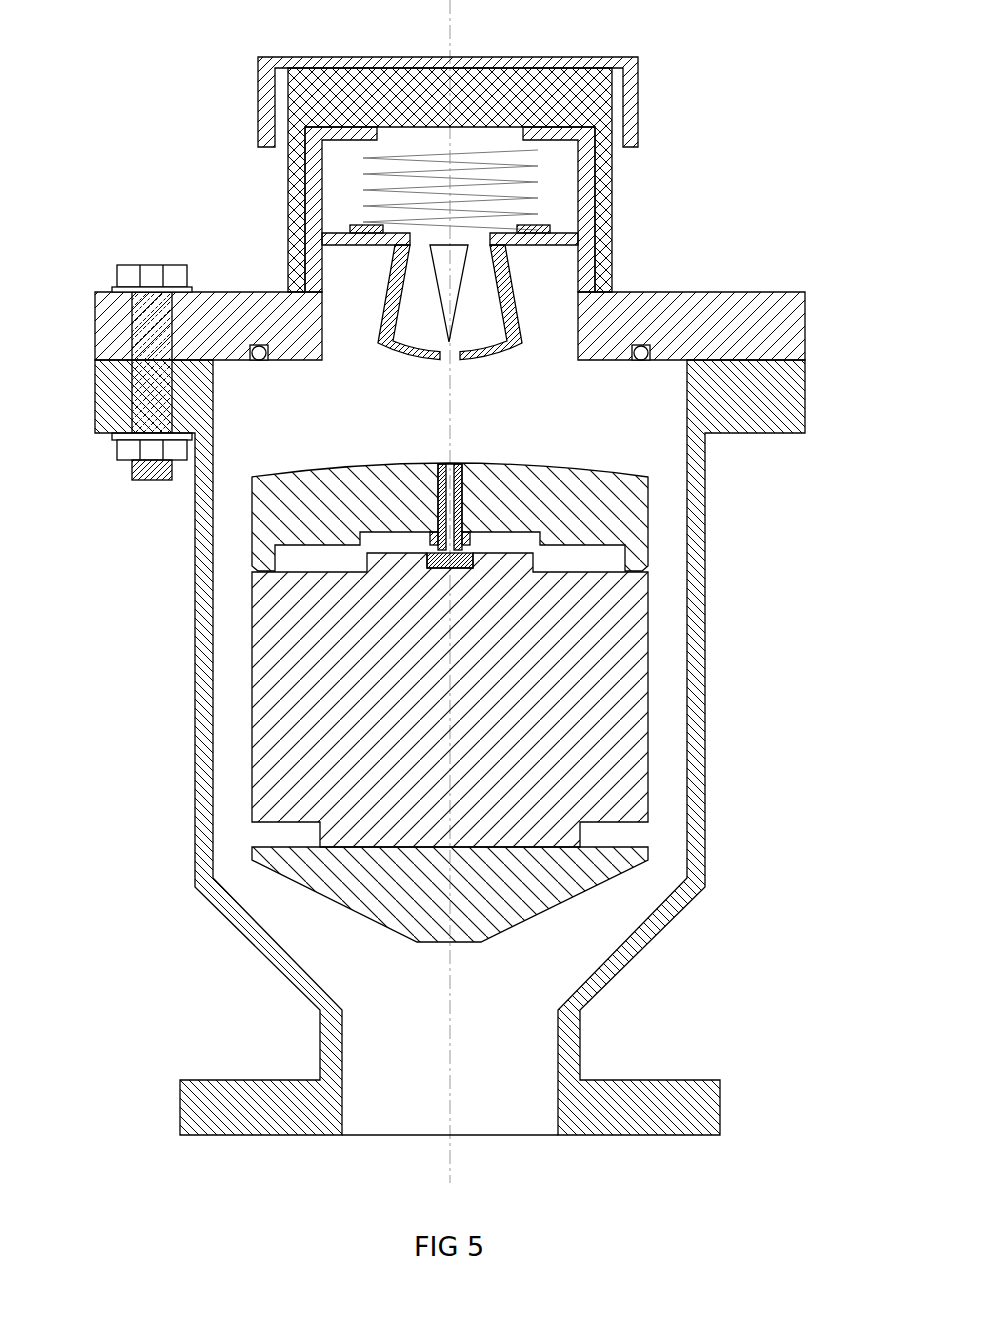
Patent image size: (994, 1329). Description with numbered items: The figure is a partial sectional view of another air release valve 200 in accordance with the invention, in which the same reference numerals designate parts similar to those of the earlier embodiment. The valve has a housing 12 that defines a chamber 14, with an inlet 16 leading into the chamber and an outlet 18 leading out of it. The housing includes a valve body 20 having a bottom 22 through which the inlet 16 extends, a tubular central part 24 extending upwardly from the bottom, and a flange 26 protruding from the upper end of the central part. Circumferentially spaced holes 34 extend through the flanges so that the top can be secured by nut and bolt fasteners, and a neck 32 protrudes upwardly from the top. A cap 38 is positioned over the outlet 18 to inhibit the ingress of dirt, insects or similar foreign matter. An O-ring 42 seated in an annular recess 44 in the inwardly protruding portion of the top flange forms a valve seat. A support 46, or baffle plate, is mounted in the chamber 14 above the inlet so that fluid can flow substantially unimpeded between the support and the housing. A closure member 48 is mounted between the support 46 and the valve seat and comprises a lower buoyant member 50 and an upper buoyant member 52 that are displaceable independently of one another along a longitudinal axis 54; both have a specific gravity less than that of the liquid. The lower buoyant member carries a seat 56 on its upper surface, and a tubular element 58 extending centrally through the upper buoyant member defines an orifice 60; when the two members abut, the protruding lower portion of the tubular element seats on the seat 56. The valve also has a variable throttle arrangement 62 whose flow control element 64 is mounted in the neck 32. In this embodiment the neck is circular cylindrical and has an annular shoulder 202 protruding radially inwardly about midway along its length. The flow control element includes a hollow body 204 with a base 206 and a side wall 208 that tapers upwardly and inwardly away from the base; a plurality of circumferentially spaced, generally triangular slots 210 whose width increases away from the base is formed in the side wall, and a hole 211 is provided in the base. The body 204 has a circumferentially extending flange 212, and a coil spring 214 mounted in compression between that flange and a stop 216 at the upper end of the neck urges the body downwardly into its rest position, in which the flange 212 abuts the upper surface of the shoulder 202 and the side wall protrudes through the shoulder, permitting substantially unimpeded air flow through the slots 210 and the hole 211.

The valve 200 is at (113, 72).
The housing 12 is at (425, 247).
The chamber 14 is at (464, 775).
The inlet 16 is at (367, 1121).
The outlet 18 is at (453, 138).
The valve body 20 is at (163, 833).
The bottom 22 is at (208, 1080).
The tubular central part 24 is at (705, 762).
The flange 26 is at (804, 407).
The neck 32 is at (594, 223).
The holes 34 is at (124, 339).
The cap 38 is at (640, 122).
The O-ring 42 is at (638, 360).
The annular recess 44 is at (272, 364).
The support 46 is at (403, 927).
The closure member 48 is at (507, 707).
The lower buoyant member 50 is at (648, 660).
The upper buoyant member 52 is at (640, 508).
The longitudinal axis 54 is at (450, 1062).
The seat 56 is at (456, 550).
The tubular element 58 is at (462, 473).
The orifice 60 is at (436, 476).
The variable throttle arrangement 62 is at (338, 259).
The flow control element 64 is at (336, 311).
The annular shoulder 202 is at (557, 244).
The hollow body 204 is at (445, 338).
The base 206 is at (494, 356).
The side wall 208 is at (506, 323).
The slots 210 is at (446, 278).
The hole 211 is at (447, 361).
The flange 212 is at (373, 229).
The coil spring 214 is at (364, 182).
The stop 216 is at (546, 126).